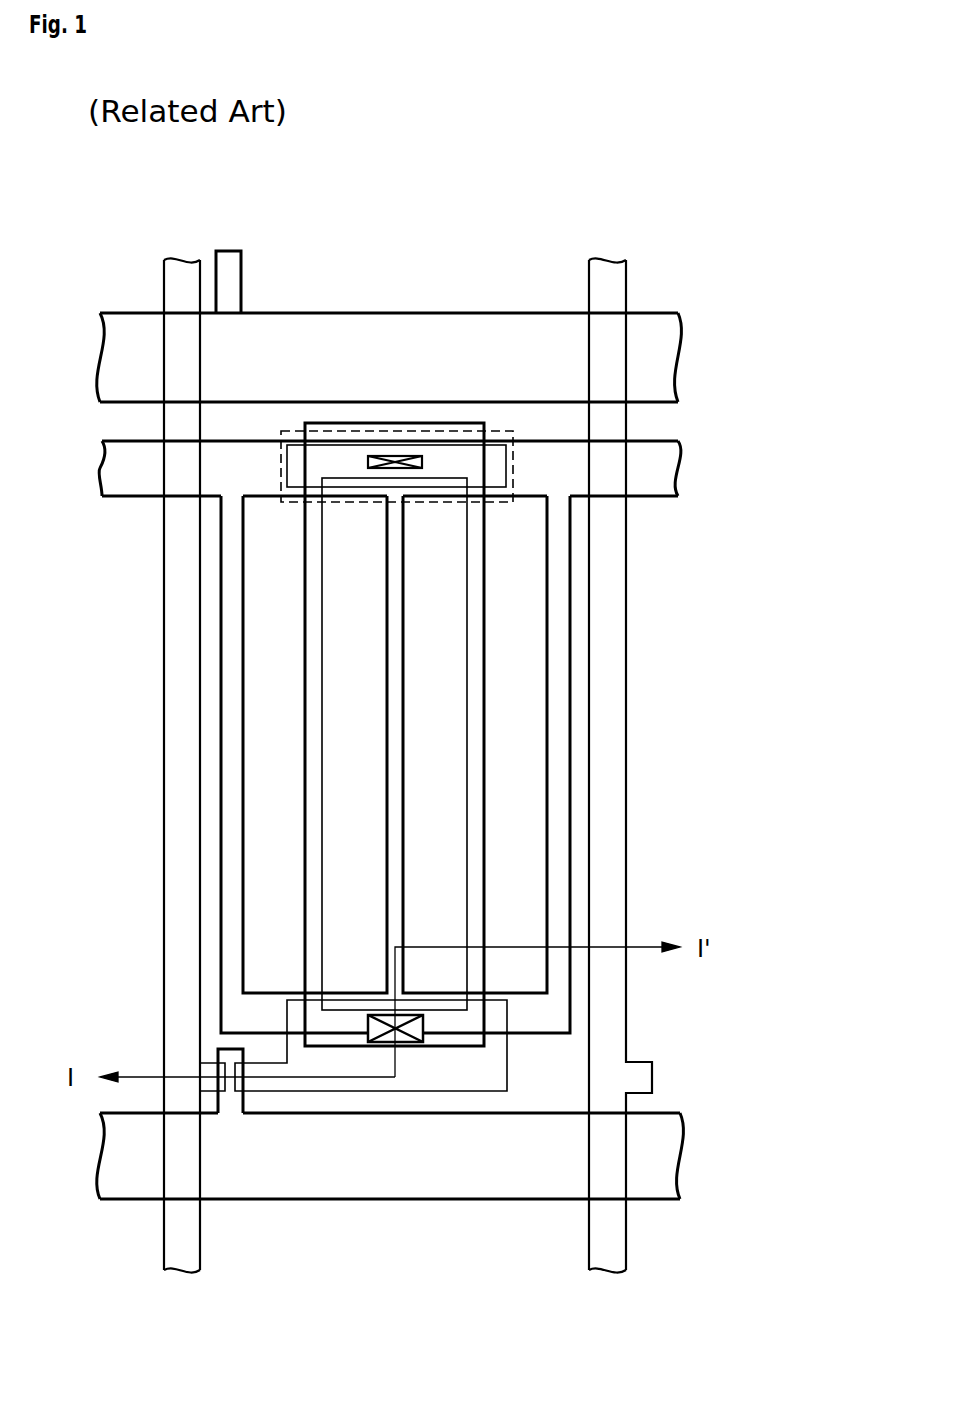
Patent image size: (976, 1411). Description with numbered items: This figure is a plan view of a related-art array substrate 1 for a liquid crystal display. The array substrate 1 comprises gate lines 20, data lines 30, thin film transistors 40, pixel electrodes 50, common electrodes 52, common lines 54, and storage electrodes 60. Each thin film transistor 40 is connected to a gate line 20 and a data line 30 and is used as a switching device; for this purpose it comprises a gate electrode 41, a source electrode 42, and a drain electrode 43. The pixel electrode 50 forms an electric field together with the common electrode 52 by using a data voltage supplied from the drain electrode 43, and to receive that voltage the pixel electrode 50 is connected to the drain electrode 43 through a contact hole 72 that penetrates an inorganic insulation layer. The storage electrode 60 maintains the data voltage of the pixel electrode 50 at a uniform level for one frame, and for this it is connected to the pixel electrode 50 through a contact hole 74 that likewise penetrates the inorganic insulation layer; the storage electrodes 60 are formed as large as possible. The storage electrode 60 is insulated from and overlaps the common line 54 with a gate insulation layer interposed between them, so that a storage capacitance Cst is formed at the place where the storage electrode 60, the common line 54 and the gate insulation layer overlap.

The array substrate 1 is at (752, 241).
The gate line 20 is at (378, 1200).
The data line 30 is at (163, 764).
The thin film transistor 40 is at (233, 1122).
The gate electrode 41 is at (243, 1100).
The source electrode 42 is at (214, 1063).
The drain electrode 43 is at (431, 1093).
The pixel electrode 50 is at (484, 743).
The common electrode 52 is at (403, 822).
The common line 54 is at (101, 469).
The storage electrode 60 is at (508, 466).
The contact hole 72 is at (423, 1028).
The contact hole 74 is at (396, 456).
The storage capacitance Cst is at (513, 438).